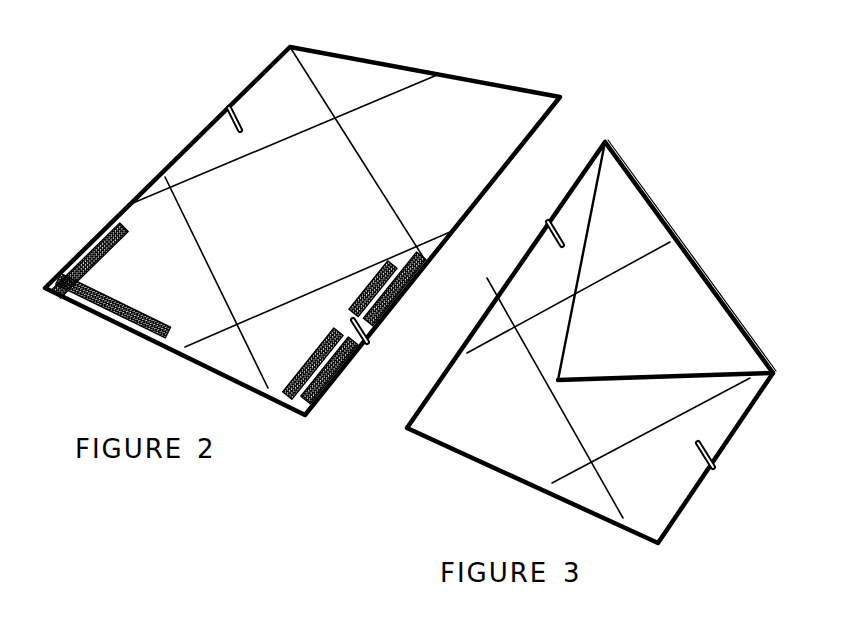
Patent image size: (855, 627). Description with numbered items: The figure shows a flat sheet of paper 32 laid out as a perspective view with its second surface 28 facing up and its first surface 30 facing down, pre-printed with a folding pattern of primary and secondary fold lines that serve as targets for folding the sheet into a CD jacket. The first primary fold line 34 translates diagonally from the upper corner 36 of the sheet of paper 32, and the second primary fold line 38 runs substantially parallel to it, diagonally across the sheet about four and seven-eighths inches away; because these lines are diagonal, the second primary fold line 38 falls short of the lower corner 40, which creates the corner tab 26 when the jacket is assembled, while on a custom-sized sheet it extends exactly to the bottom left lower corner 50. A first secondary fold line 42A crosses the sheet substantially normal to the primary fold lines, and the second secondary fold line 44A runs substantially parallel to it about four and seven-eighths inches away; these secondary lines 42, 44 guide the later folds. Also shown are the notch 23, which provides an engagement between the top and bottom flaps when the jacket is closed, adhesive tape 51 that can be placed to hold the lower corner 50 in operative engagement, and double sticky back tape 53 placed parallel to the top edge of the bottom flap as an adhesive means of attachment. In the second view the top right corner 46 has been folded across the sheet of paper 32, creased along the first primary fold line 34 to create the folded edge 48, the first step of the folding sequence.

In FIG. 2, the notch 23 is at (228, 109).
In FIG. 3, the notch 23 is at (549, 223).
In FIG. 2, the corner tab 26 is at (323, 398).
In FIG. 2, the second surface 28 is at (253, 117).
In FIG. 3, the second surface 28 is at (520, 457).
In FIG. 2, the first surface 30 is at (147, 186).
In FIG. 3, the first surface 30 is at (680, 312).
In FIG. 2, the sheet of paper 32 is at (124, 208).
In FIG. 2, the first primary fold line 34 is at (331, 112).
In FIG. 3, the first primary fold line 34 is at (752, 400).
In FIG. 2, the upper corner 36 is at (291, 46).
In FIG. 3, the upper corner 36 is at (605, 141).
In FIG. 2, the second primary fold line 38 is at (208, 256).
In FIG. 3, the second primary fold line 38 is at (553, 395).
In FIG. 2, the lower corner 40 is at (307, 417).
In FIG. 3, the lower corner 40 is at (659, 545).
In FIG. 3, the fold line 42 is at (533, 310).
In FIG. 2, the first secondary fold line 42A is at (268, 147).
In FIG. 3, the fold line 44 is at (648, 432).
In FIG. 2, the second secondary fold line 44A is at (381, 261).
In FIG. 2, the top right corner 46 is at (559, 97).
In FIG. 3, the folded edge 48 is at (670, 242).
In FIG. 2, the bottom left lower corner 50 is at (44, 290).
In FIG. 3, the bottom left lower corner 50 is at (407, 430).
In FIG. 2, the adhesive tape 51 is at (112, 320).
In FIG. 2, the double sticky back tape 53 is at (402, 291).